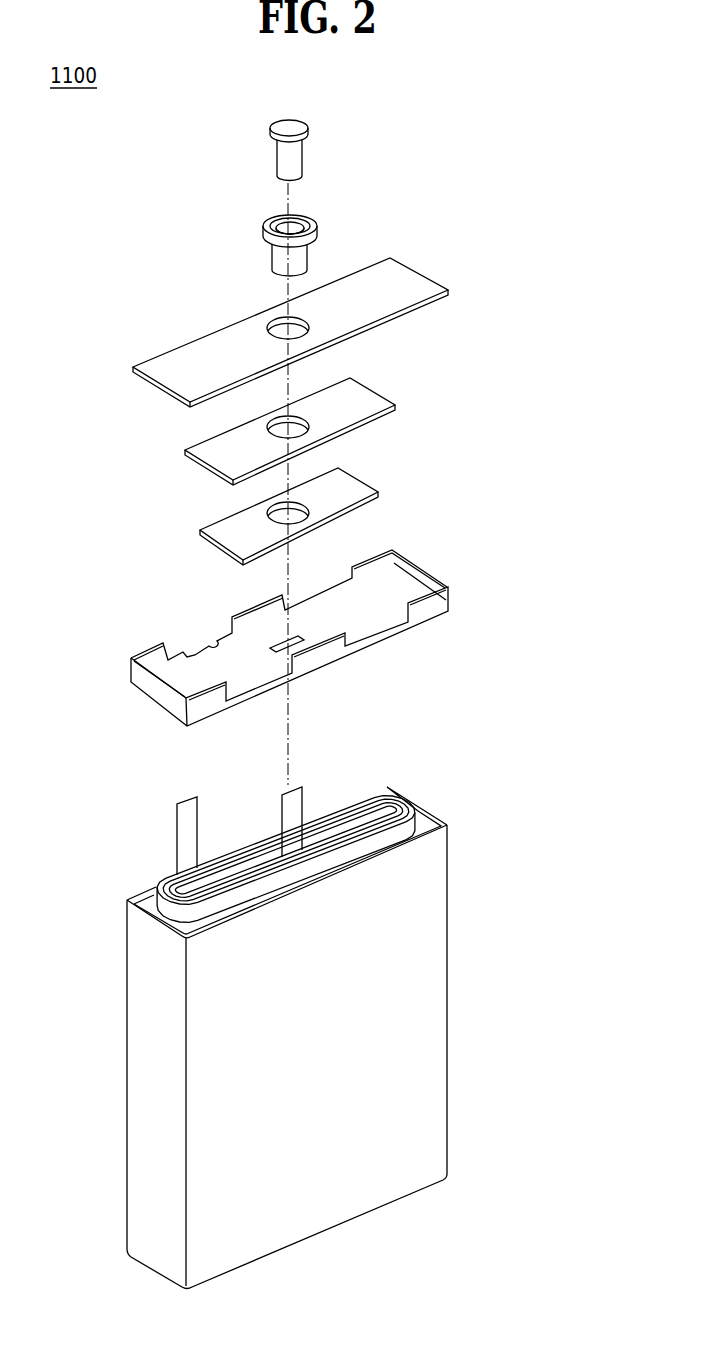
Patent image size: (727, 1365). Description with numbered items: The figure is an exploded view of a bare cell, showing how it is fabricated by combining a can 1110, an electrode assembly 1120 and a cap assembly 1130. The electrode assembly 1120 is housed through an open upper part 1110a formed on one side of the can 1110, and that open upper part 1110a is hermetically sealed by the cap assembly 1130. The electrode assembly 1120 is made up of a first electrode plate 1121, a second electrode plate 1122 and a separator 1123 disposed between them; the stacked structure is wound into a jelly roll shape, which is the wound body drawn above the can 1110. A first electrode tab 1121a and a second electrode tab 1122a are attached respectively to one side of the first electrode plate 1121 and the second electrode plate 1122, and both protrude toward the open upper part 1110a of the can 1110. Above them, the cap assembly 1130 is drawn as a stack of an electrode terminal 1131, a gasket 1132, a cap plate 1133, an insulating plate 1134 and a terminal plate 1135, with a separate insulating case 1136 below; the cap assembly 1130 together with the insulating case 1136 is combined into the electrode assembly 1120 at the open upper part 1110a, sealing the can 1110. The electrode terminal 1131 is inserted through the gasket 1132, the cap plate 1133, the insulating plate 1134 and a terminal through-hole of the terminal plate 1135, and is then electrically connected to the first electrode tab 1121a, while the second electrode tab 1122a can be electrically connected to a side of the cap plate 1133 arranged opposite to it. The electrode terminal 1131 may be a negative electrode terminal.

The can 1110 is at (480, 926).
The open upper part 1110a is at (442, 824).
The electrode assembly 1120 is at (328, 778).
The first electrode plate 1121 is at (388, 790).
The first electrode tab 1121a is at (278, 808).
The second electrode plate 1122 is at (413, 800).
The second electrode tab 1122a is at (177, 825).
The separator 1123 is at (400, 792).
The cap assembly 1130 is at (453, 229).
The electrode terminal 1131 is at (285, 123).
The gasket 1132 is at (262, 222).
The cap plate 1133 is at (175, 355).
The insulating plate 1134 is at (370, 395).
The terminal plate 1135 is at (363, 487).
The insulating case 1136 is at (155, 697).